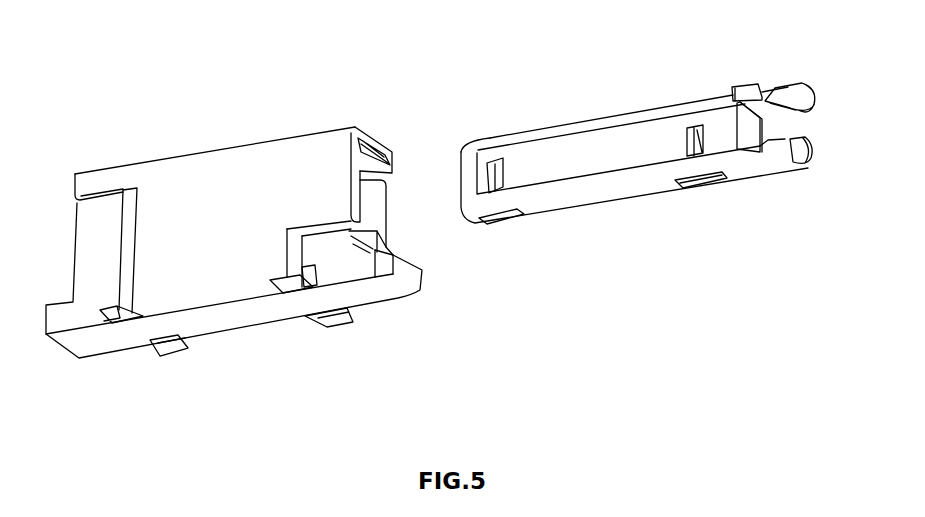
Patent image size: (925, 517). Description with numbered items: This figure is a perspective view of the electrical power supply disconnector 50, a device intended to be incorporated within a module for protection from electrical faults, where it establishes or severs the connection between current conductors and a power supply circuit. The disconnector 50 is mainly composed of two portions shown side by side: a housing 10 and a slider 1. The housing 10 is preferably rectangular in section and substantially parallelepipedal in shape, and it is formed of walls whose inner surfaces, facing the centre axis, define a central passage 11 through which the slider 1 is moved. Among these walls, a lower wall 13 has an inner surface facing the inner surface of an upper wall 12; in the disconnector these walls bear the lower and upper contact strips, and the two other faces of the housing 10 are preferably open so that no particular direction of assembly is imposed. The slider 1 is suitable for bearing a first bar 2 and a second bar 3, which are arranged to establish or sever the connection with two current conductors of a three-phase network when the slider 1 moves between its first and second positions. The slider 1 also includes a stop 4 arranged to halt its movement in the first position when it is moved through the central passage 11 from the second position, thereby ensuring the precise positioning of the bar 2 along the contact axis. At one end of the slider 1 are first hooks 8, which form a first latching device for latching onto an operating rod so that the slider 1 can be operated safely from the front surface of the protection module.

The electrical power supply disconnector 50 is at (88, 74).
The housing 10 is at (168, 213).
The upper wall 12 is at (310, 129).
The central passage 11 is at (367, 208).
The lower wall 13 is at (230, 314).
The slider 1 is at (565, 160).
The bar 2 is at (498, 224).
The second bar 3 is at (697, 188).
The stop 4 is at (745, 83).
The first hooks 8 is at (768, 141).